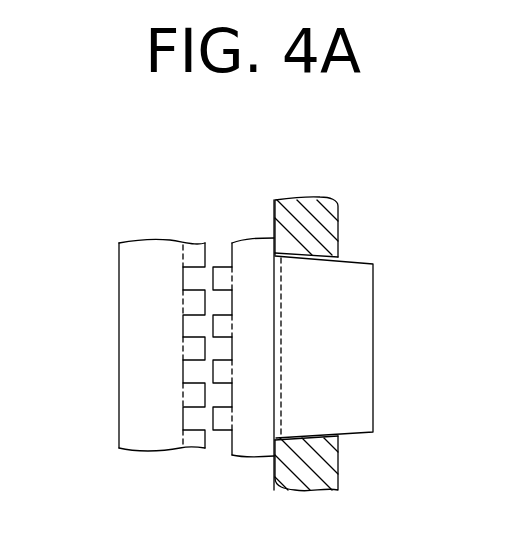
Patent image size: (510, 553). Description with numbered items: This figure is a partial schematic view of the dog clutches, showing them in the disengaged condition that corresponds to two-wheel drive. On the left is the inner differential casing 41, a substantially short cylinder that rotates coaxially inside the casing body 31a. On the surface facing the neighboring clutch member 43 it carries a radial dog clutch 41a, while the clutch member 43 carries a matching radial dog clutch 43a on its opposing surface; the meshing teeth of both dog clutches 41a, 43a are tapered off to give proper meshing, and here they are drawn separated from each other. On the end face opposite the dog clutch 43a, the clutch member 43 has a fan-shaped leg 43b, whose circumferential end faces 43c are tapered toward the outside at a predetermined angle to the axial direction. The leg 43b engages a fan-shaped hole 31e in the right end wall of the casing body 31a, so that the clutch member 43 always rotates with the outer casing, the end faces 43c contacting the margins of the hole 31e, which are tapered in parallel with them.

The inner differential casing 41 is at (119, 328).
The dog clutch 41a is at (196, 230).
The clutch member 43 is at (247, 458).
The dog clutch 43a is at (225, 230).
The fan-shaped leg 43b is at (373, 325).
The circumferential end face 43c is at (350, 260).
The casing body 31a is at (317, 210).
The fan-shaped hole 31e is at (313, 262).